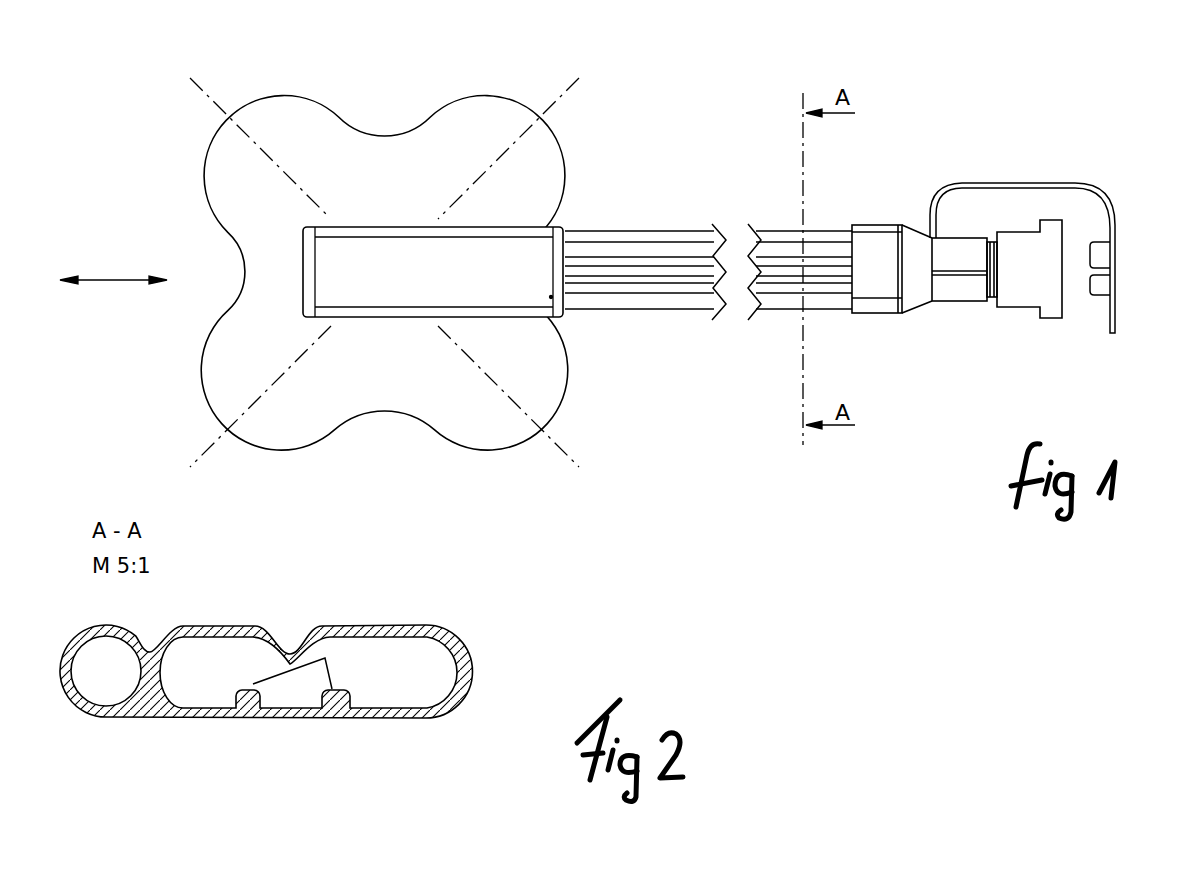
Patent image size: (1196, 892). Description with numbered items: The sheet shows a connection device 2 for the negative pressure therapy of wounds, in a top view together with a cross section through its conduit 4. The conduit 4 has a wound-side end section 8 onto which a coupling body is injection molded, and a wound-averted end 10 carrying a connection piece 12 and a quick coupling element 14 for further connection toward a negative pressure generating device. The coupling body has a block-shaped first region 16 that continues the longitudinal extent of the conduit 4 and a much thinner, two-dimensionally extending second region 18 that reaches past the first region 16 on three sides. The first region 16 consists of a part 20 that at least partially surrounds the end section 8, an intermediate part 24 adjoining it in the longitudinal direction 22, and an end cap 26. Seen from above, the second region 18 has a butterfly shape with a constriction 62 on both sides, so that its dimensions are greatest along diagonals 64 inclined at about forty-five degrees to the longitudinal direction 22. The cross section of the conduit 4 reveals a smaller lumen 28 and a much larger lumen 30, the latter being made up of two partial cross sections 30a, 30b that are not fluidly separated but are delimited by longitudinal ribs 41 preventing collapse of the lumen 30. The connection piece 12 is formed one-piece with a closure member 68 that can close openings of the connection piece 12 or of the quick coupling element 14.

In FIG. 1, the connection device 2 is at (628, 130).
In FIG. 1, the conduit 4 is at (637, 236).
In FIG. 2, the conduit 4 is at (472, 660).
In FIG. 1, the wound-side end section 8 is at (560, 303).
In FIG. 1, the wound-averted end 10 is at (905, 198).
In FIG. 1, the connection piece 12 is at (900, 313).
In FIG. 1, the quick coupling element 14 is at (1022, 307).
In FIG. 1, the first region 16 is at (500, 289).
In FIG. 1, the second region 18 is at (478, 422).
In FIG. 1, the part surrounding the end section 20 is at (545, 252).
In FIG. 1, the longitudinal direction 22 is at (108, 280).
In FIG. 1, the intermediate part 24 is at (383, 250).
In FIG. 1, the end cap 26 is at (305, 287).
In FIG. 2, the lumen 28 is at (115, 683).
In FIG. 2, the lumen 30 is at (270, 686).
In FIG. 2, the partial cross section 30a is at (238, 682).
In FIG. 2, the partial cross section 30b is at (410, 679).
In FIG. 2, the longitudinal ribs 41 is at (303, 666).
In FIG. 1, the constriction 62 is at (354, 128).
In FIG. 1, the diagonals 64 is at (216, 106).
In FIG. 1, the closure member 68 is at (1118, 268).